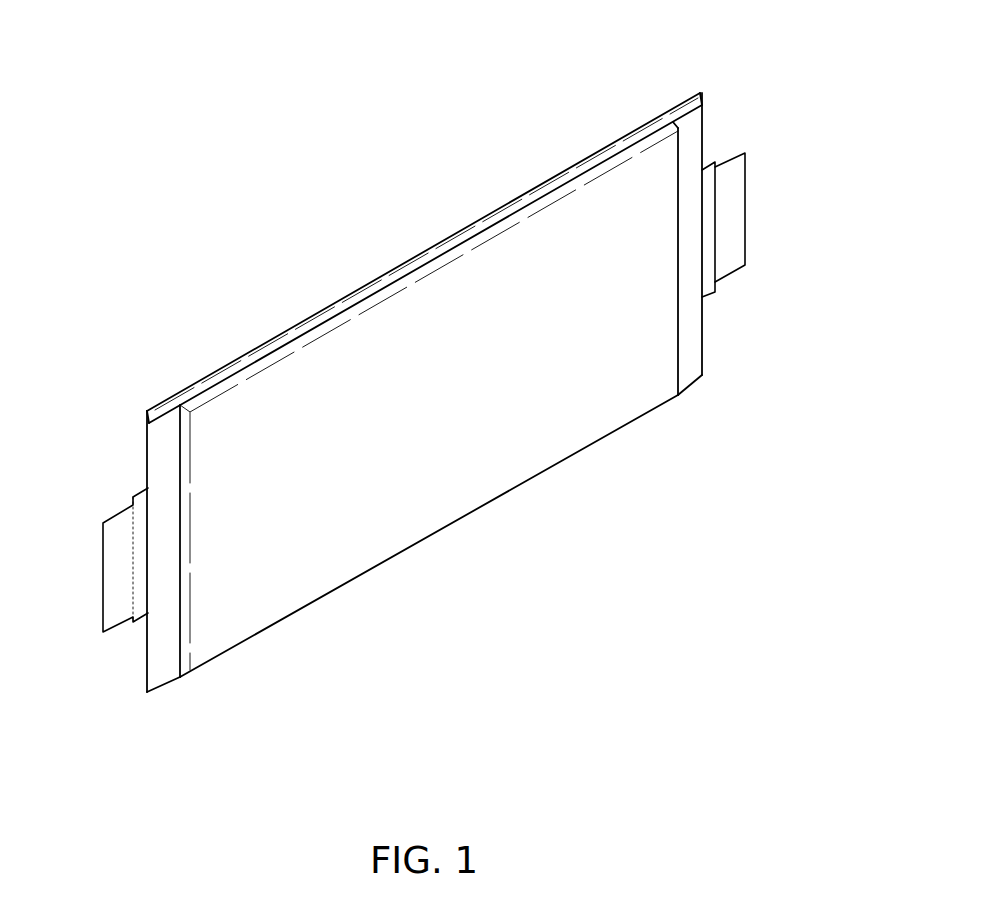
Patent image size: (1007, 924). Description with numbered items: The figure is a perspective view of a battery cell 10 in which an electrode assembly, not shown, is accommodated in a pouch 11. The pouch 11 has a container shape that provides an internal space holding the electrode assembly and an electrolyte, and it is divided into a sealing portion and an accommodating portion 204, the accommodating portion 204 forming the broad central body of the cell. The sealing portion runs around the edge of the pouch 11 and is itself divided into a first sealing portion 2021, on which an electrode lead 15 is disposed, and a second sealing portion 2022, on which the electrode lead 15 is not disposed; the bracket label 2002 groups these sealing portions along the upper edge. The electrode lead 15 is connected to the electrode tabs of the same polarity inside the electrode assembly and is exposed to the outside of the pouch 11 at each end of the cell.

The battery cell 10 is at (389, 88).
The pouch 11 is at (690, 347).
The electrode lead 15 is at (733, 235).
The accommodating portion 204 is at (448, 488).
The cover assembly 2002 is at (660, 17).
The first sealing portion 2021 is at (692, 129).
The second sealing portion 2022 is at (627, 141).